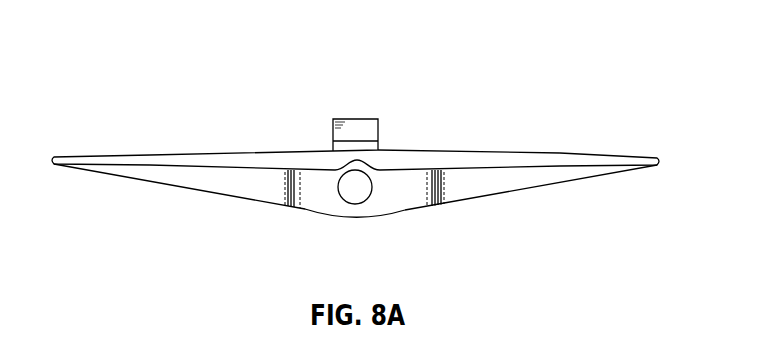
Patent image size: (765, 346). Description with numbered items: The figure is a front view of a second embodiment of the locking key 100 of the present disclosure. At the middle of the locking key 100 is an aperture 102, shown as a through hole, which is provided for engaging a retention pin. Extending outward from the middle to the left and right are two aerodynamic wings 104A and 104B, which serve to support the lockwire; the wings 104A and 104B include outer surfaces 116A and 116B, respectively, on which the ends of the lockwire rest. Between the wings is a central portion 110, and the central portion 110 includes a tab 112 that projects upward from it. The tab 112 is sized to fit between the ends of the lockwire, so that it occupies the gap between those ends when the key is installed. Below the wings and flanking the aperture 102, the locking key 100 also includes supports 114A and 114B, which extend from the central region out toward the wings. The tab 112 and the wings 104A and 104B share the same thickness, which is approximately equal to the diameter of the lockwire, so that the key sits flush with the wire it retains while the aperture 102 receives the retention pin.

The locking key 100 is at (623, 42).
The aperture 102 is at (338, 188).
The aerodynamic wing 104A is at (148, 157).
The aerodynamic wing 104B is at (605, 160).
The central portion 110 is at (358, 160).
The tab 112 is at (367, 125).
The support 114A is at (240, 190).
The support 114B is at (473, 190).
The outer surface 116A is at (227, 151).
The outer surface 116B is at (485, 151).